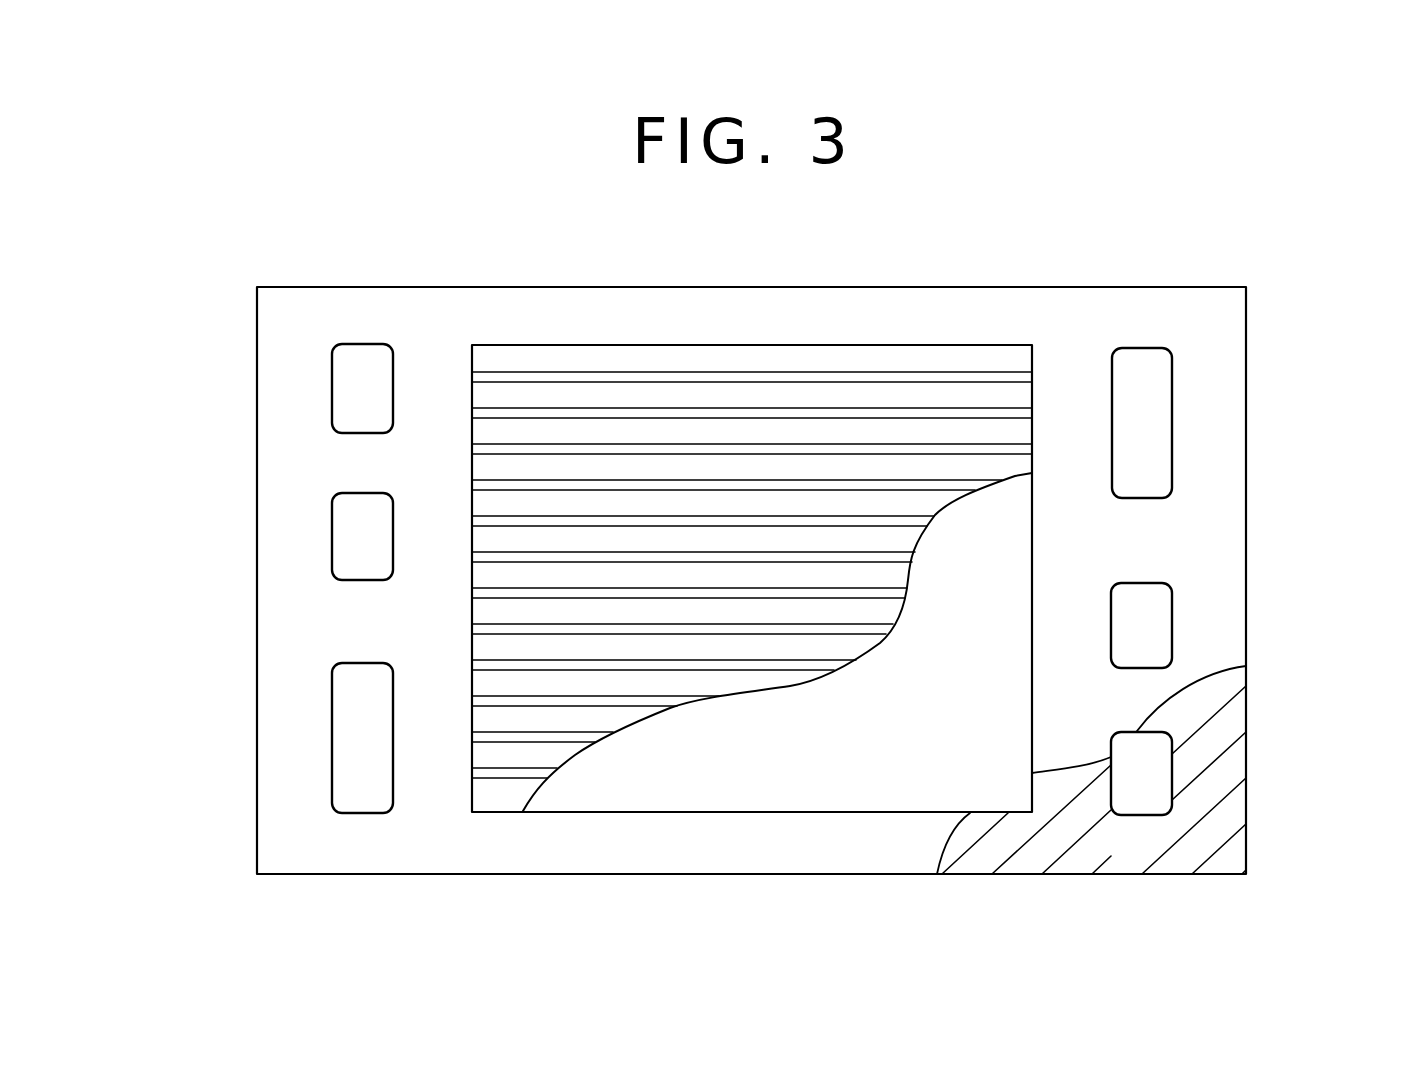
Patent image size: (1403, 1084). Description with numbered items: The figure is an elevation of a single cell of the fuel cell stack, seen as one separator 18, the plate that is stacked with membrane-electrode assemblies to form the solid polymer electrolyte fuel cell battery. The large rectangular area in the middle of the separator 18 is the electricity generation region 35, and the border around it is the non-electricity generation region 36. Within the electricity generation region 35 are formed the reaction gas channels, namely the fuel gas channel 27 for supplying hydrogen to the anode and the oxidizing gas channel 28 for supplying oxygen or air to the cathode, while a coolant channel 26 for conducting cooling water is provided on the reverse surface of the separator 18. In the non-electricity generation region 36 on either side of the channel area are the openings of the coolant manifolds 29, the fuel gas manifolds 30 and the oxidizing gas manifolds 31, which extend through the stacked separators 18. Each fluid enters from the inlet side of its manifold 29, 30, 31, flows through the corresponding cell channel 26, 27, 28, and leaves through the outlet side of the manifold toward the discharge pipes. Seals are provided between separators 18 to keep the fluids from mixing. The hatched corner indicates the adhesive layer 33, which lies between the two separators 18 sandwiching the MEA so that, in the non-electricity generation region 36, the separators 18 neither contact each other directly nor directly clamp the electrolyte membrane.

The separator 18 is at (1246, 358).
The coolant channel 26 is at (728, 397).
The fuel gas channel 27 is at (752, 520).
The oxidizing gas channel 28 is at (541, 372).
The coolant manifold 29 is at (358, 553).
The fuel gas manifold 30 is at (363, 396).
The oxidizing gas manifold 31 is at (365, 754).
The adhesive layer 33 is at (1185, 842).
The electricity generation region 35 is at (813, 408).
The non-electricity generation region 36 is at (987, 318).